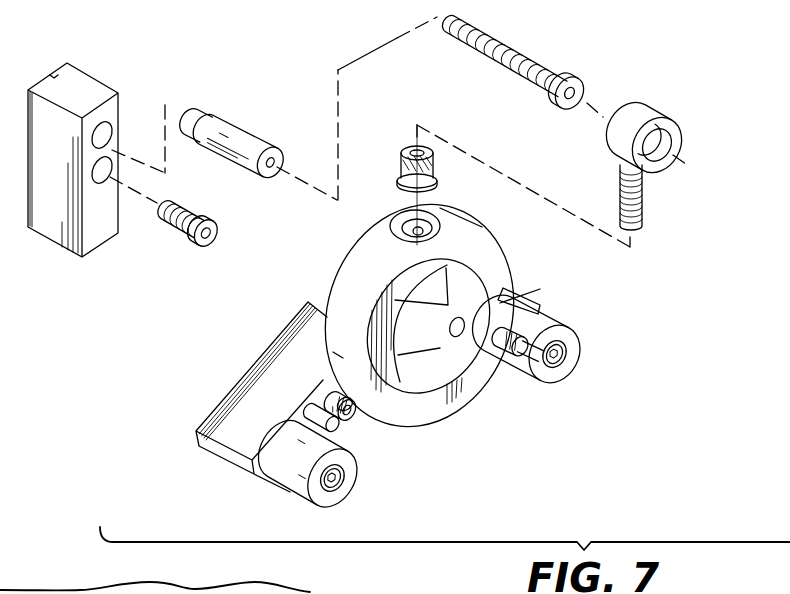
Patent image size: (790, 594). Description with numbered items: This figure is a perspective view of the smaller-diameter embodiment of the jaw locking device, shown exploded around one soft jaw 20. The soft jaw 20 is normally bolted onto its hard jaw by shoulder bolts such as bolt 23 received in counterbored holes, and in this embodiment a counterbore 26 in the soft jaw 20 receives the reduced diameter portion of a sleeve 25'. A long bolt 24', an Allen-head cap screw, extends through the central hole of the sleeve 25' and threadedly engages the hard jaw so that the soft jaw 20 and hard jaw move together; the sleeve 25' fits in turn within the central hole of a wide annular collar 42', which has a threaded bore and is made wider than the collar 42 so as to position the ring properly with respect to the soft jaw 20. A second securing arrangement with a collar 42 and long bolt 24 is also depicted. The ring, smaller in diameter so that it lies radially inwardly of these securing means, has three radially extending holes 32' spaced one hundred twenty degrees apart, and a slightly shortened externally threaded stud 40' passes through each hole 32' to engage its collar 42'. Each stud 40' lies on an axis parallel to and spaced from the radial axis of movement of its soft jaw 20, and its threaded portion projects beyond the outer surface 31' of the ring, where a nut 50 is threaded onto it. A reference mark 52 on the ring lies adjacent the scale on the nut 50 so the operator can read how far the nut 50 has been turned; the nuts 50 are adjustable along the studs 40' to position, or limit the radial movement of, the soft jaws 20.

The soft jaw 20 is at (513, 293).
The counterbore 26 is at (112, 130).
The bolt 23 is at (188, 243).
The sleeve 25' is at (235, 127).
The long bolt 24' is at (537, 60).
The annular collar 42' is at (480, 305).
The stud 40' is at (507, 299).
The nut 50 is at (352, 414).
The radial hole 32' is at (441, 210).
The reference mark 52 is at (367, 407).
The outer surface 31' is at (419, 316).
The annular collar 42 is at (546, 339).
The long bolt 24 is at (583, 377).